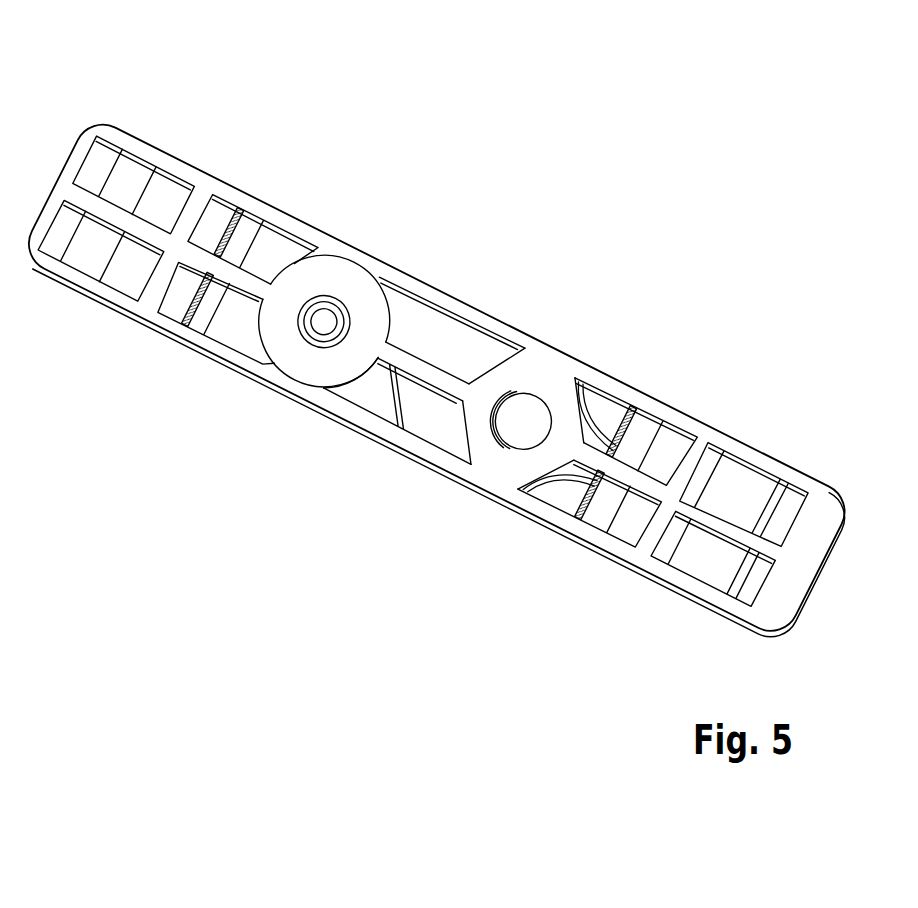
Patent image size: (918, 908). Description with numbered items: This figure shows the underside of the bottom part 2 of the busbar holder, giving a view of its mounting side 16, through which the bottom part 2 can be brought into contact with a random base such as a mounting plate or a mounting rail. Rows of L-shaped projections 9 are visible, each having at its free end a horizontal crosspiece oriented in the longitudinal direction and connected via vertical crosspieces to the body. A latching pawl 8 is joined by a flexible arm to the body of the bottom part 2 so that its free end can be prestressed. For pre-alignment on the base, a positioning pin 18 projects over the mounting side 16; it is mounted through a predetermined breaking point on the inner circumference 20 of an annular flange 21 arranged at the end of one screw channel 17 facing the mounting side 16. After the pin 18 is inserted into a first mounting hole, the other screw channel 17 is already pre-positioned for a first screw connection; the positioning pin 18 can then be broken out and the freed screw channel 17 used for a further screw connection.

The bottom part 2 is at (532, 82).
The latching pawl 8 is at (427, 420).
The projections 9 is at (249, 233).
The mounting side 16 is at (337, 262).
The screw channel 17 is at (347, 292).
The positioning pin 18 is at (322, 318).
The inner circumference 20 is at (511, 408).
The annular flange 21 is at (500, 381).